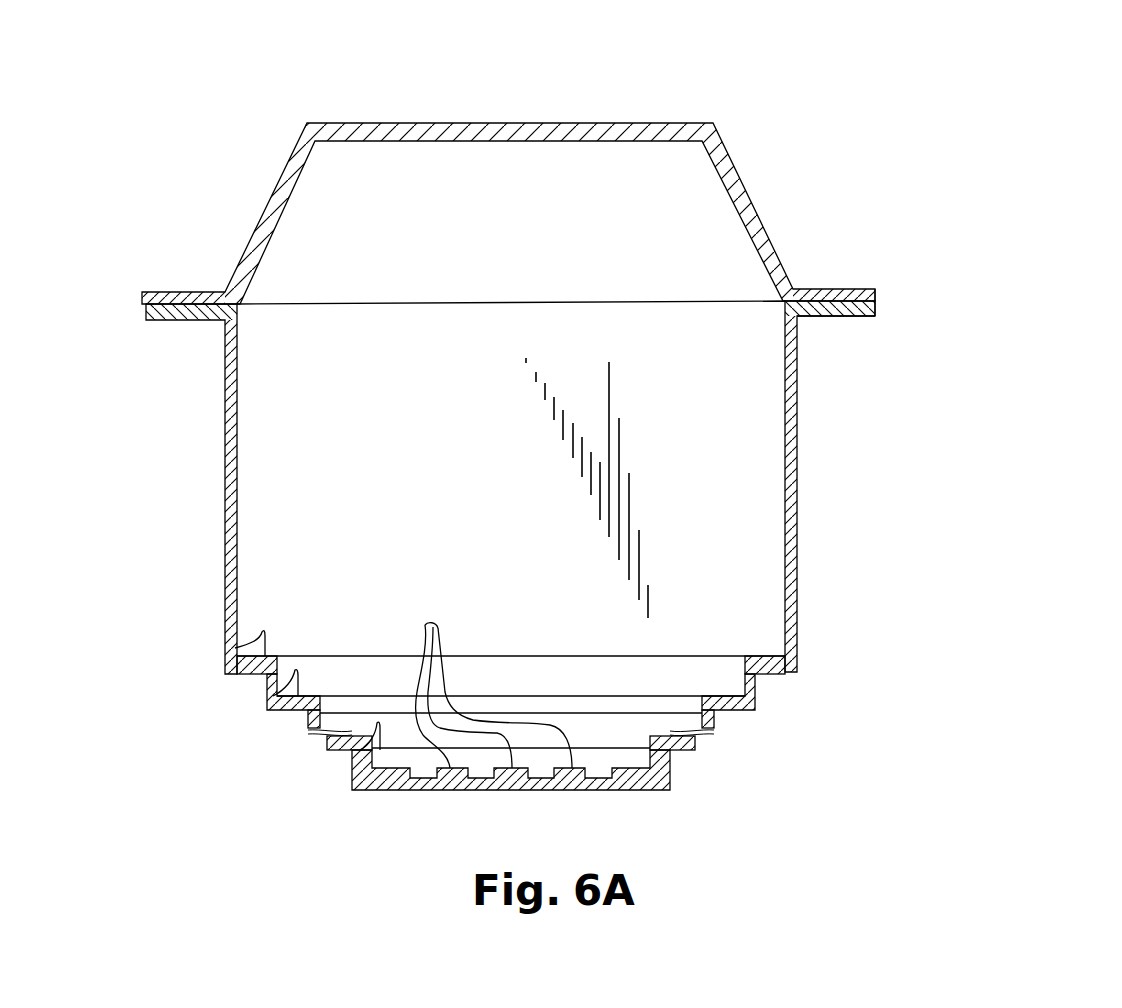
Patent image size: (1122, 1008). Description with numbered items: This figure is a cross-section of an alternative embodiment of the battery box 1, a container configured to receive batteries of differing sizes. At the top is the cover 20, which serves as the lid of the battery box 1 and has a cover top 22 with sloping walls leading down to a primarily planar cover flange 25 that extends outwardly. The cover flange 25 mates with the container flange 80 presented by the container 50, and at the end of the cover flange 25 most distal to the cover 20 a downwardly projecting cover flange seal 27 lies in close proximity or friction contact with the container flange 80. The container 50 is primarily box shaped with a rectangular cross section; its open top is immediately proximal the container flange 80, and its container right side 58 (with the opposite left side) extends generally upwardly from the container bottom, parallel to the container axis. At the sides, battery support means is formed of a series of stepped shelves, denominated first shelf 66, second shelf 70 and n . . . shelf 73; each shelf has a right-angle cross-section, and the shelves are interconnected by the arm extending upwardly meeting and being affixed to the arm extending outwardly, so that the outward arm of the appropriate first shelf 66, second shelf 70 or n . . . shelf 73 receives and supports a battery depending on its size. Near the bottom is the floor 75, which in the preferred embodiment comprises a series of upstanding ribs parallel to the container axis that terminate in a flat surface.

The battery box 1 is at (977, 178).
The cover 20 is at (737, 160).
The cover top 22 is at (540, 123).
The cover flange 25 is at (833, 292).
The cover flange seal 27 is at (875, 298).
The container flange 80 is at (845, 316).
The container 50 is at (797, 488).
The container right side 58 is at (797, 548).
The first shelf 66 is at (230, 650).
The second shelf 70 is at (266, 700).
The n . . . shelf 73 is at (372, 735).
The floor 75 is at (424, 628).